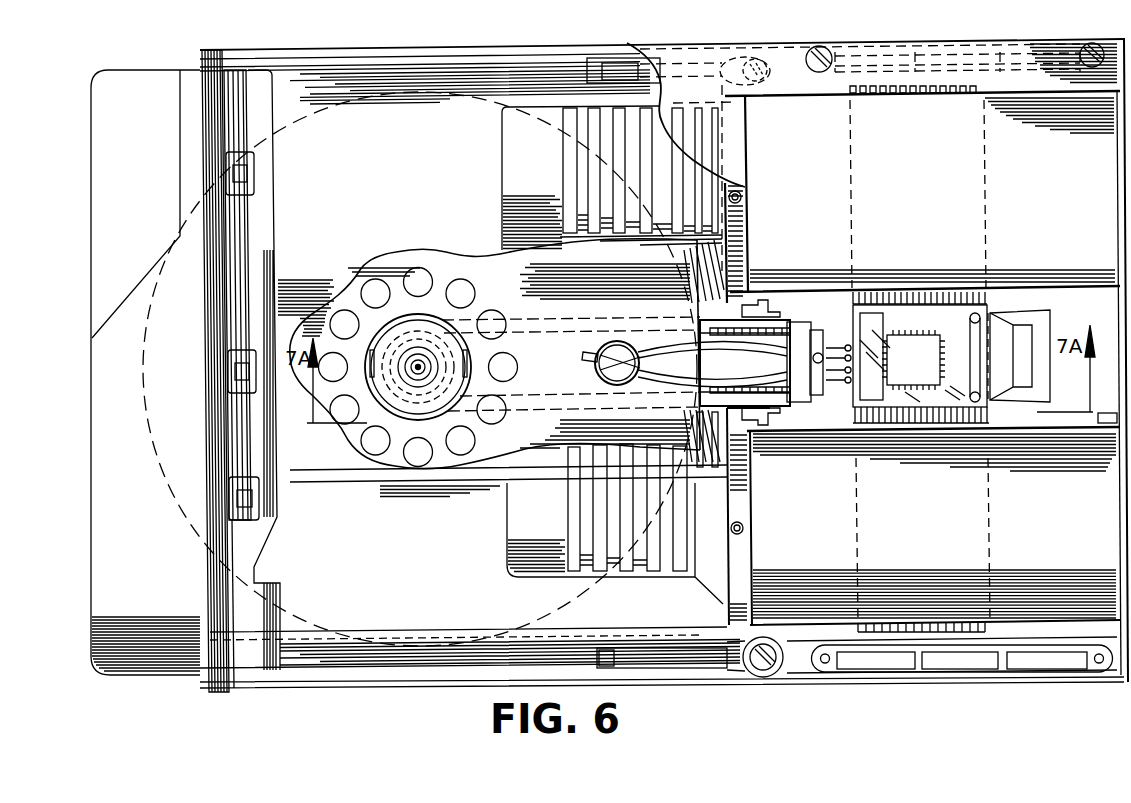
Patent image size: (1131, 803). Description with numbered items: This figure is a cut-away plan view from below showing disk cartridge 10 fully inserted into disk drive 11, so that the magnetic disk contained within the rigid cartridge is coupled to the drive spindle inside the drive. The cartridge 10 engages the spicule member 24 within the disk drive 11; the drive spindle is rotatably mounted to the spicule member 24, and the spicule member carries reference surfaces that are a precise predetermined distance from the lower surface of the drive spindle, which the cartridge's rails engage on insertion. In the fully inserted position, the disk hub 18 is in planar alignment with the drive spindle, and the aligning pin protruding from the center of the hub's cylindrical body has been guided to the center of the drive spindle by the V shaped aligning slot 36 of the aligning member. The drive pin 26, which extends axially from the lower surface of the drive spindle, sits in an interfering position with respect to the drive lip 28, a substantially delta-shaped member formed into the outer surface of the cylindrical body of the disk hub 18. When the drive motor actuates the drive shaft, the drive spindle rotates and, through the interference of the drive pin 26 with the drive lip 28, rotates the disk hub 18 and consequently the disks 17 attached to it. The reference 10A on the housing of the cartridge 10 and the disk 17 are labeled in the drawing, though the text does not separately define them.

The cartridge 10 is at (153, 70).
The housing door 10A is at (105, 397).
The disk drive 11 is at (707, 47).
The disk 17 is at (143, 322).
The disk hub 18 is at (395, 416).
The spicule member 24 is at (553, 385).
The drive pin 26 is at (477, 417).
The drive lip 28 is at (429, 442).
The V shaped aligning slot 36 is at (372, 380).